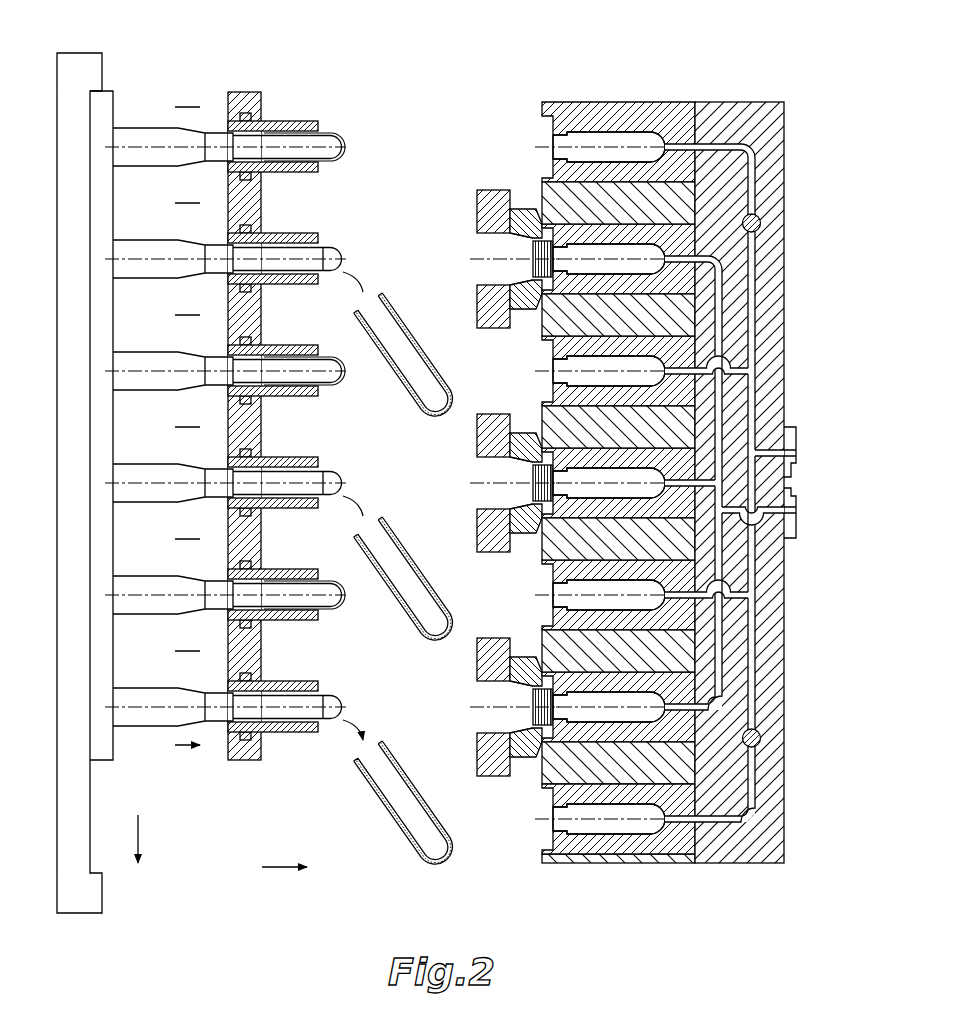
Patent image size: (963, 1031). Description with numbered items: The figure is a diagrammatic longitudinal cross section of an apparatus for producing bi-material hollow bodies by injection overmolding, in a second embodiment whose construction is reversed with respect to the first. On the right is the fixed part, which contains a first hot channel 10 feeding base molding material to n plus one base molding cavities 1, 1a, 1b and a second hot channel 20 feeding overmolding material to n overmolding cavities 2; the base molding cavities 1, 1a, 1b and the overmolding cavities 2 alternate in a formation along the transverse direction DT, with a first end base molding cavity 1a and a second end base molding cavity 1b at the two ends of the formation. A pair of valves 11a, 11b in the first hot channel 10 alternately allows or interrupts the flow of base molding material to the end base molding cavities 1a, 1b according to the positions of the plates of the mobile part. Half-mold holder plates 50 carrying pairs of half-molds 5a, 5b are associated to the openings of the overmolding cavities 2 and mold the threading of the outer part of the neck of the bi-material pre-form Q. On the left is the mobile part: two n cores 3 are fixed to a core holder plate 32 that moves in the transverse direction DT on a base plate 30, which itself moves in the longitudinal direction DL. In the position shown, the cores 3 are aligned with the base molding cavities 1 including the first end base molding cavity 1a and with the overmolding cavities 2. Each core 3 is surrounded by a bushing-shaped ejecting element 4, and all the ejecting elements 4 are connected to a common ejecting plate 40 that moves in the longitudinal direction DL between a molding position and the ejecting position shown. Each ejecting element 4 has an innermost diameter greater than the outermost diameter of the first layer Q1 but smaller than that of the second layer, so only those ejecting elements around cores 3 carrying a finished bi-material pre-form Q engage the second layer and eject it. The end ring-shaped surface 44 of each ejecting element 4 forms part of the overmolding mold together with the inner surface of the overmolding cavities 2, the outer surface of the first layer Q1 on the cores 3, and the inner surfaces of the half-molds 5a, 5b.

The base molding cavity 1 is at (632, 385).
The first end base molding cavity 1a is at (617, 137).
The second end base molding cavity 1b is at (617, 825).
The overmolding cavity 2 is at (632, 268).
The core 3 is at (340, 152).
The ejecting element 4 is at (303, 173).
The end ring-shaped surface 44 is at (320, 131).
The half-mold 5a is at (530, 207).
The half-mold 5b is at (530, 307).
The half-mold holder plate 50 is at (477, 213).
The first hot channel 10 is at (770, 445).
The second hot channel 20 is at (768, 512).
The valve 11a is at (763, 228).
The valve 11b is at (760, 727).
The base plate 30 is at (75, 68).
The core holder plate 32 is at (108, 740).
The common ejecting plate 40 is at (248, 90).
The first layer Q1 is at (358, 624).
The bi-material pre-form Q is at (418, 342).
The transverse direction DT is at (142, 838).
The longitudinal direction DL is at (285, 865).